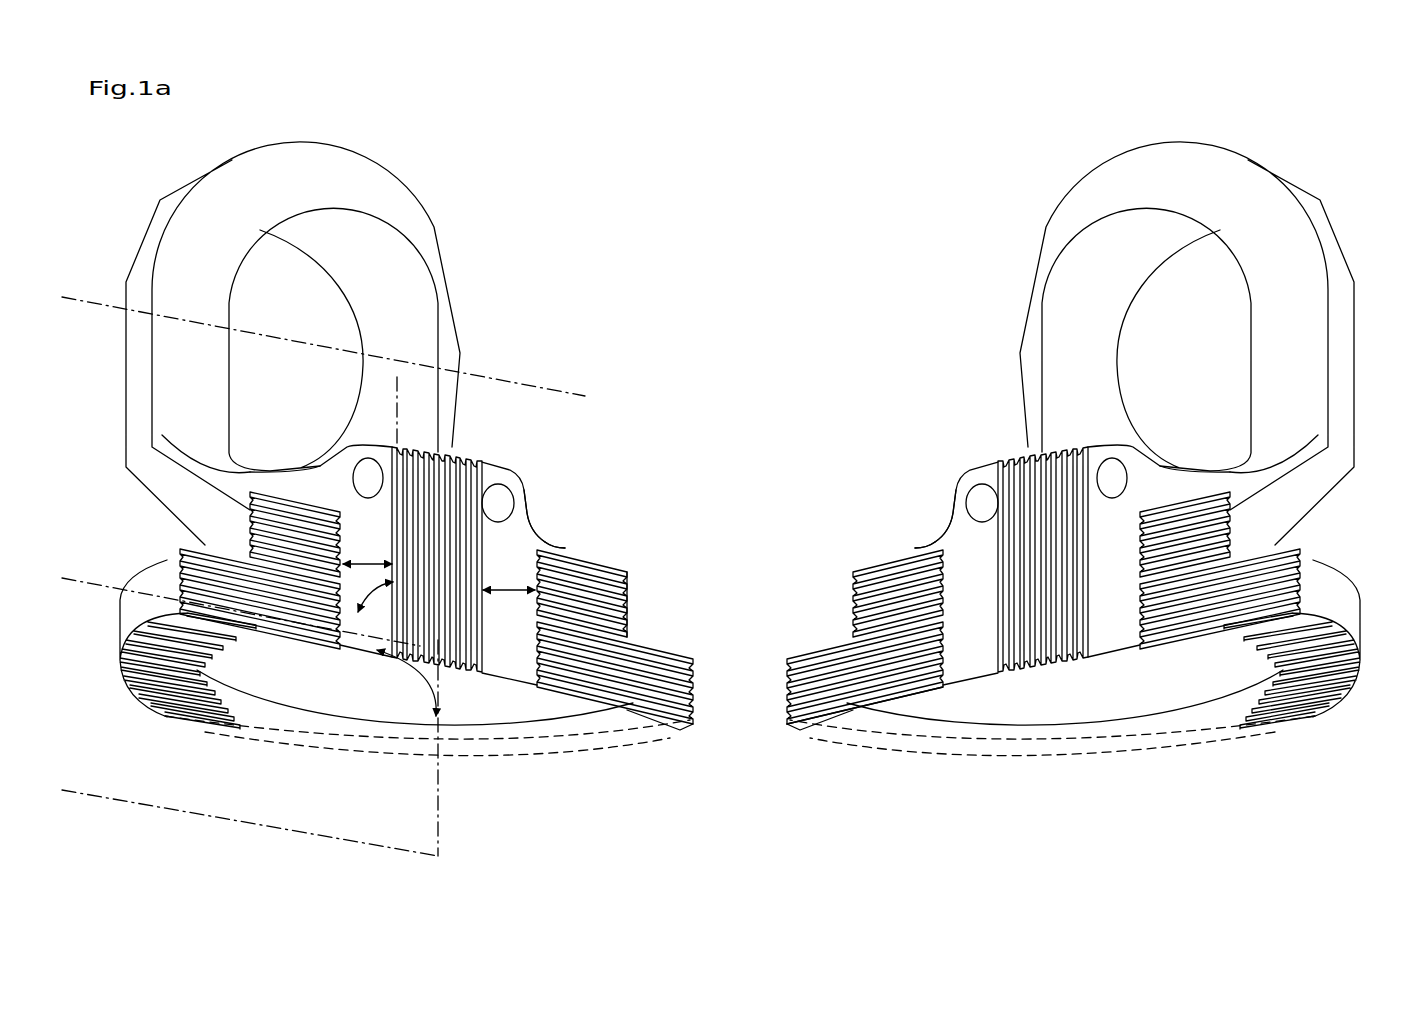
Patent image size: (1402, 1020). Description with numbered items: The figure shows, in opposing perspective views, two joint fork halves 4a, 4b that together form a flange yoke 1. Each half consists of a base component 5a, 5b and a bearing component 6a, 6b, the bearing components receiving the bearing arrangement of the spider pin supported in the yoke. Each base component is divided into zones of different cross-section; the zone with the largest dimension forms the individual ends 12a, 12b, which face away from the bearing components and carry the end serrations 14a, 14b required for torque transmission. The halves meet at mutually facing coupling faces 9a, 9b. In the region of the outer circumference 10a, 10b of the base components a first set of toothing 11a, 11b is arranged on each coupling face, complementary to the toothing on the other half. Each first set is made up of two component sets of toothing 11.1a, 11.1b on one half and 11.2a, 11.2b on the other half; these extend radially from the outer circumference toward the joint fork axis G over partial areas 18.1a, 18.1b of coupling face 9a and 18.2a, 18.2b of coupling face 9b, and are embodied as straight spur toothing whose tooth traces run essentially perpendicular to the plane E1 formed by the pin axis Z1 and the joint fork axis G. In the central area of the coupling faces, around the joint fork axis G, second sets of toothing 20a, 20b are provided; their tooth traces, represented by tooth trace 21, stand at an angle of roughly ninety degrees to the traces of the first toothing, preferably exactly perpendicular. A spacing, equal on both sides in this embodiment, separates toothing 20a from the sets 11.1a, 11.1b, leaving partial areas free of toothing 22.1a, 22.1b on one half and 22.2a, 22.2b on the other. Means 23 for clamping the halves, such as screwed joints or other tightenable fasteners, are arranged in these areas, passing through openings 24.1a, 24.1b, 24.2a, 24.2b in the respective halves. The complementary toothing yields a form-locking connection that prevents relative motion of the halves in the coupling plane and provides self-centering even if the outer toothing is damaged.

The flange yoke 1 is at (657, 207).
The joint fork half 4a is at (443, 180).
The joint fork half 4b is at (1020, 212).
The bearing component 6a is at (438, 266).
The bearing component 6b is at (1217, 173).
The means for clamping 23 is at (523, 473).
The coupling face 9a is at (523, 535).
The coupling face 9b is at (975, 495).
The outer circumference 10a is at (553, 537).
The outer circumference 10b is at (945, 520).
The through opening 24.1a is at (353, 480).
The through opening 24.1b is at (492, 486).
The through opening 24.2a is at (1100, 470).
The through opening 24.2b is at (981, 484).
The second set of toothing 20a is at (446, 458).
The second set of toothing 20b is at (1022, 465).
The first set of toothing 11a is at (584, 537).
The first set of toothing 11b is at (838, 581).
The component set of toothing 11.1a is at (180, 550).
The component set of toothing 11.1b is at (633, 583).
The component set of toothing 11.2a is at (1287, 556).
The component set of toothing 11.2b is at (792, 713).
The partial area 18.1a is at (293, 617).
The partial area 18.1b is at (593, 673).
The partial area 18.2a is at (1173, 660).
The partial area 18.2b is at (920, 670).
The partial area free of toothing 22.1a is at (358, 640).
The partial area free of toothing 22.1b is at (517, 677).
The partial area free of toothing 22.2a is at (1120, 660).
The partial area free of toothing 22.2b is at (973, 670).
The base component 5a is at (641, 672).
The base component 5b is at (861, 674).
The individual end 12a is at (655, 735).
The individual end 12b is at (862, 735).
The end serrations 14a is at (153, 697).
The end serrations 14b is at (1300, 710).
The tooth trace 21 is at (393, 387).
The pin axis Z1 is at (508, 380).
The joint fork axis G is at (445, 826).
The plane E1 is at (227, 793).